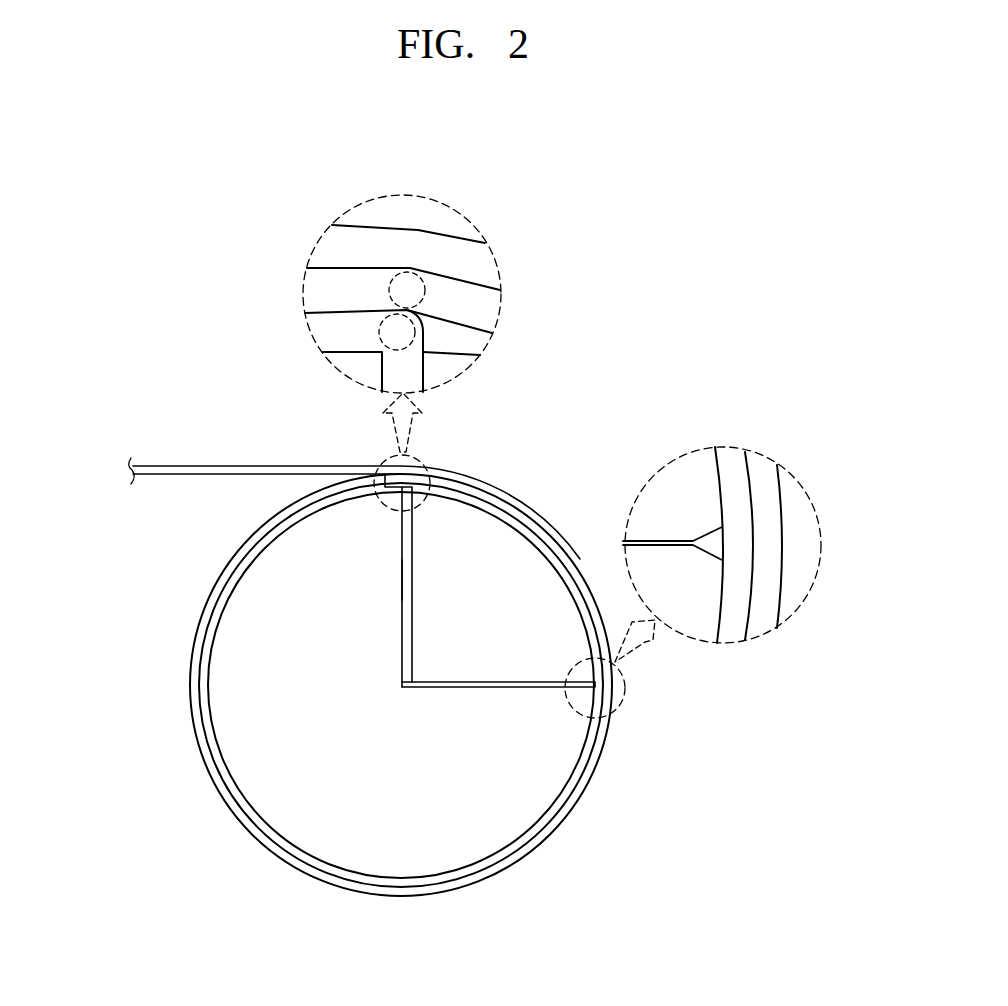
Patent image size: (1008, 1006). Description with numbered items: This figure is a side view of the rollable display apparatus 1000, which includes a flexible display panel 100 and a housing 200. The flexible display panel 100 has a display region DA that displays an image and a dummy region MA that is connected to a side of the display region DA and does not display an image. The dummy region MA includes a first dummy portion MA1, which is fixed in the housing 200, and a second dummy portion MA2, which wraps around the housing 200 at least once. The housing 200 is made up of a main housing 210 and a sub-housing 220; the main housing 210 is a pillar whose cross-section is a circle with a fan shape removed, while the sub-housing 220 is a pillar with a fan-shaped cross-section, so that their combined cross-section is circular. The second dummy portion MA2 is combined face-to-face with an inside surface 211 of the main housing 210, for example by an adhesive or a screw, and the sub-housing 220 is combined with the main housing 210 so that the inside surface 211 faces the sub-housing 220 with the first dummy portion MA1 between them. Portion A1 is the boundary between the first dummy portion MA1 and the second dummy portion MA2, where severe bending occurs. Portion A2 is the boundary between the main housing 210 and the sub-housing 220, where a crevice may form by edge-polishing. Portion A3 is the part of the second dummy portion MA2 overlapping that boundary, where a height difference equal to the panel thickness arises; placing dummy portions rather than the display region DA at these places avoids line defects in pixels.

The rollable display apparatus 1000 is at (519, 458).
The flexible display panel 100 is at (90, 502).
The display region DA is at (190, 472).
The dummy region MA is at (130, 568).
The first dummy portion MA1 is at (402, 582).
The second dummy portion MA2 is at (213, 618).
The housing 200 is at (532, 952).
The main housing 210 is at (447, 863).
The inside surface 211 is at (402, 665).
The sub-housing 220 is at (507, 670).
The boundary region between first and second dummy portions A1 is at (413, 332).
The boundary region between main housing and sub-housing A2 is at (622, 700).
The portion of second dummy portion overlapping the boundary region A3 is at (412, 270).